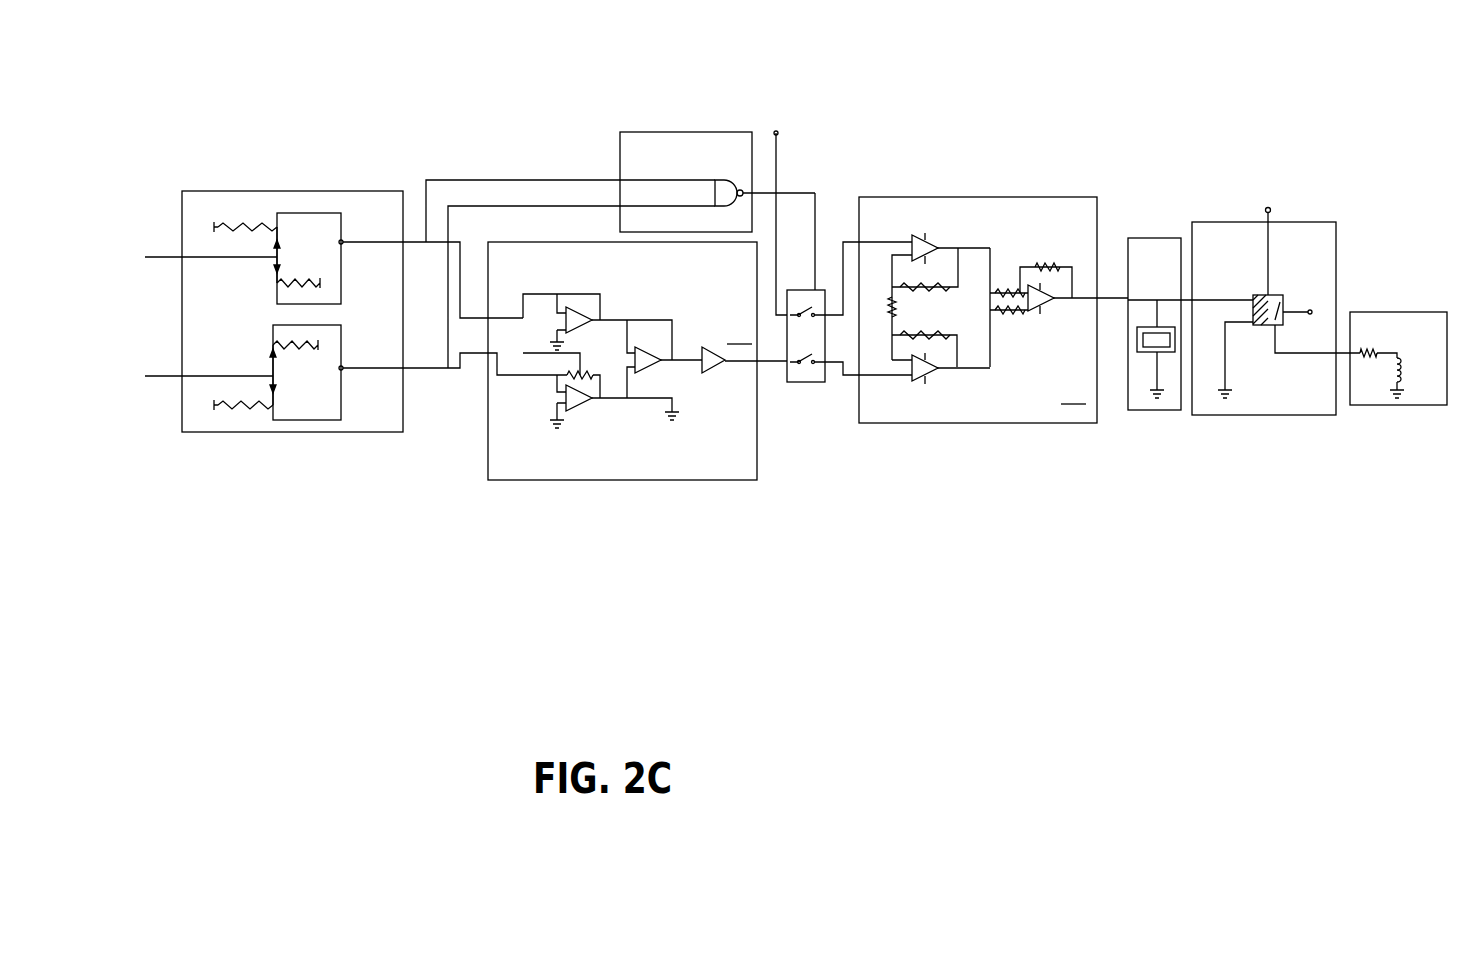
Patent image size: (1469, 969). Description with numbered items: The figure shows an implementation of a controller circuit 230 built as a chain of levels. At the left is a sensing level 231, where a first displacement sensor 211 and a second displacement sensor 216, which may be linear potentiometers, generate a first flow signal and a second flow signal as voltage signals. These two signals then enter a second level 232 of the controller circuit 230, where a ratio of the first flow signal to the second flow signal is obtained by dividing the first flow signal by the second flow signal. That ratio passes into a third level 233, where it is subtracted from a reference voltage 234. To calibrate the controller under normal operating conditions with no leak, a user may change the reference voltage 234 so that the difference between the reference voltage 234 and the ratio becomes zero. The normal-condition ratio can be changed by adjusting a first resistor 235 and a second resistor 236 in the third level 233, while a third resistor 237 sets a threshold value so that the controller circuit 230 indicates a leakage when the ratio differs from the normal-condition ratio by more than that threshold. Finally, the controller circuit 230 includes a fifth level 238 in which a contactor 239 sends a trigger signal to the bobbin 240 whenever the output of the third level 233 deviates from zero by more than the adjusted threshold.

The controller circuit 230 is at (348, 72).
The first displacement sensor 211 is at (268, 222).
The second displacement sensor 216 is at (268, 420).
The sensing level 231 is at (375, 447).
The second level 232 is at (682, 502).
The third level 233 is at (1030, 448).
The reference voltage 234 is at (817, 131).
The first resistor 235 is at (905, 213).
The second resistor 236 is at (874, 425).
The third resistor 237 is at (1060, 226).
The fifth level 238 is at (1257, 439).
The contactor 239 is at (1295, 262).
The bobbin 240 is at (1408, 443).